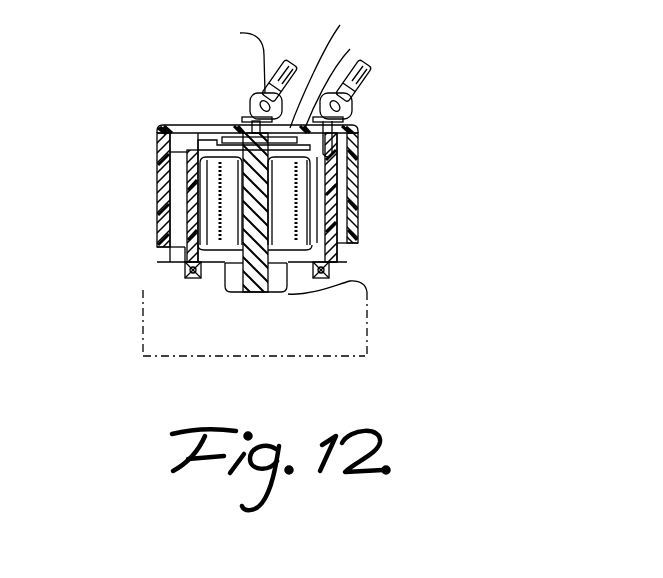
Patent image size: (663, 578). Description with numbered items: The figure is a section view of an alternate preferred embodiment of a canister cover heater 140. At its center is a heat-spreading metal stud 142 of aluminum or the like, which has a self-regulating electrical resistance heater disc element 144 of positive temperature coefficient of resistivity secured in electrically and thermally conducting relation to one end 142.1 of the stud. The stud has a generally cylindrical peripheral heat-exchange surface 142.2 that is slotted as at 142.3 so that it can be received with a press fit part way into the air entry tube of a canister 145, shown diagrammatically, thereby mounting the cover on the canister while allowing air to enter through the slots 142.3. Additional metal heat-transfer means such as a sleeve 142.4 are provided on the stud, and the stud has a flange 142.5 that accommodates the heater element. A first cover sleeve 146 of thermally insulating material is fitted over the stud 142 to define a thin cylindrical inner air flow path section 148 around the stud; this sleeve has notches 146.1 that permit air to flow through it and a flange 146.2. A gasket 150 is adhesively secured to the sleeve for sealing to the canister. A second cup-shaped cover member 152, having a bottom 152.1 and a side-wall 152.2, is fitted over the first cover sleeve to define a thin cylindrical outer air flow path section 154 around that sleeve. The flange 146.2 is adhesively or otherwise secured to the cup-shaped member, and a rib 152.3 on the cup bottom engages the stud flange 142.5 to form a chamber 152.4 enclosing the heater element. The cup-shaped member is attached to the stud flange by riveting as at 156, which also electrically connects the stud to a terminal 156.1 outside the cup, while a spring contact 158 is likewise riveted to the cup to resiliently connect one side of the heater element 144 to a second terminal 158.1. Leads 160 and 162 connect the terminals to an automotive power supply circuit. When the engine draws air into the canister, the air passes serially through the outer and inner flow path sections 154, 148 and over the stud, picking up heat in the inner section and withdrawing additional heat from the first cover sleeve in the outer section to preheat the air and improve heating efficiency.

The cover heater 140 is at (462, 117).
The heat-spreading metal stud 142 is at (157, 250).
The end of the stud 142.1 is at (224, 128).
The cylindrical peripheral heat-exchange surface 142.2 is at (226, 256).
The slots 142.3 is at (345, 284).
The sleeve 142.4 is at (152, 240).
The stud flange 142.5 is at (192, 181).
The heater disc element 144 is at (238, 128).
The canister 145 is at (366, 344).
The first cover sleeve 146 is at (187, 250).
The notches 146.1 is at (352, 164).
The flange of the first cover sleeve 146.2 is at (192, 158).
The inner air flow path section 148 is at (202, 214).
The gasket 150 is at (172, 278).
The second cup-shaped cover member 152 is at (362, 233).
The bottom 152.1 is at (353, 80).
The side-wall 152.2 is at (350, 206).
The rib 152.3 is at (162, 134).
The chamber 152.4 is at (228, 128).
The outer air flow path section 154 is at (167, 242).
The riveting 156 is at (345, 141).
The terminal 156.1 is at (352, 106).
The spring contact 158 is at (338, 69).
The second terminal 158.1 is at (223, 56).
The lead 160 is at (370, 82).
The lead 162 is at (282, 74).